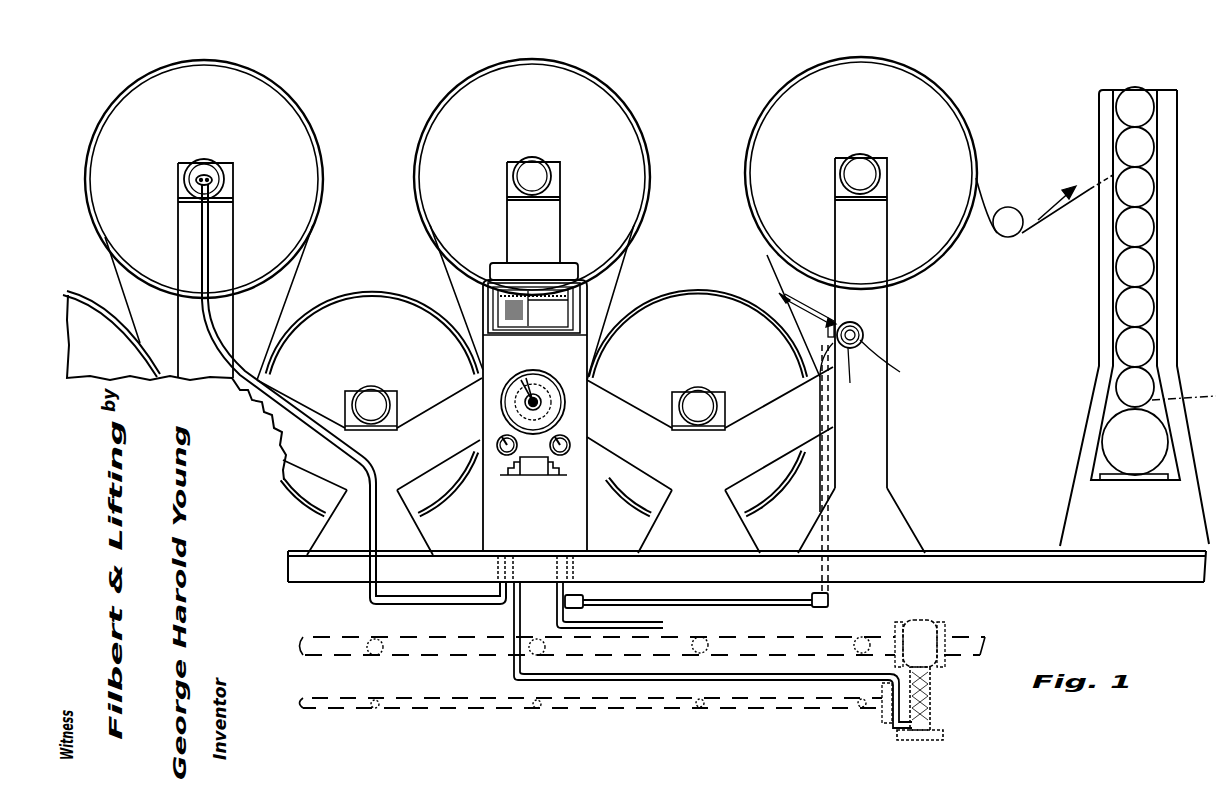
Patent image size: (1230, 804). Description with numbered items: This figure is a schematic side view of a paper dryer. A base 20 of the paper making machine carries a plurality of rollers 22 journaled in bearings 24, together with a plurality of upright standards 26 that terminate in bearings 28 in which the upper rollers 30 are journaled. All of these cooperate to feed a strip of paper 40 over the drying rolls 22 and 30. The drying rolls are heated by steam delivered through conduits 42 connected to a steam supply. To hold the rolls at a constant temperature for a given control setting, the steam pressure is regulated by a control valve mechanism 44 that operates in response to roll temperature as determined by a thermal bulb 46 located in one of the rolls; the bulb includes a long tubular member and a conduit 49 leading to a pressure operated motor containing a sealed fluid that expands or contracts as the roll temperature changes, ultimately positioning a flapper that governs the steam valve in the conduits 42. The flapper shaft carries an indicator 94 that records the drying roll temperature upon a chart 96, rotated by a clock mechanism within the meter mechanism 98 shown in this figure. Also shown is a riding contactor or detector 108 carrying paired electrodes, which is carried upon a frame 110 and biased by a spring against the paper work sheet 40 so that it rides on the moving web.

The base 20 is at (1140, 570).
The rollers 22 is at (85, 318).
The bearings 24 is at (375, 395).
The standards 26 is at (230, 222).
The bearings 28 is at (200, 165).
The rollers 30 is at (300, 120).
The strip of paper 40 is at (628, 262).
The conduits 42 is at (378, 655).
The control valve mechanism 44 is at (928, 716).
The thermal bulb 46 is at (216, 173).
The conduit 49 is at (210, 268).
The indicator 94 is at (522, 395).
The chart 96 is at (538, 388).
The meter mechanism 98 is at (556, 405).
The riding contactor 108 is at (785, 300).
The frame 110 is at (825, 322).